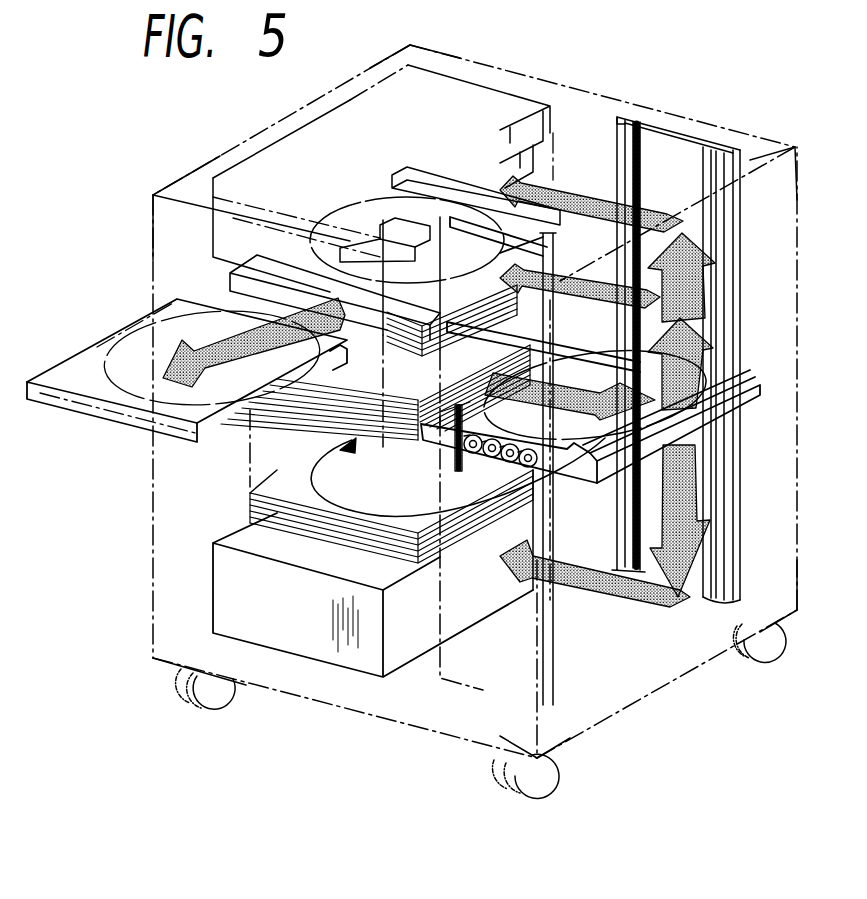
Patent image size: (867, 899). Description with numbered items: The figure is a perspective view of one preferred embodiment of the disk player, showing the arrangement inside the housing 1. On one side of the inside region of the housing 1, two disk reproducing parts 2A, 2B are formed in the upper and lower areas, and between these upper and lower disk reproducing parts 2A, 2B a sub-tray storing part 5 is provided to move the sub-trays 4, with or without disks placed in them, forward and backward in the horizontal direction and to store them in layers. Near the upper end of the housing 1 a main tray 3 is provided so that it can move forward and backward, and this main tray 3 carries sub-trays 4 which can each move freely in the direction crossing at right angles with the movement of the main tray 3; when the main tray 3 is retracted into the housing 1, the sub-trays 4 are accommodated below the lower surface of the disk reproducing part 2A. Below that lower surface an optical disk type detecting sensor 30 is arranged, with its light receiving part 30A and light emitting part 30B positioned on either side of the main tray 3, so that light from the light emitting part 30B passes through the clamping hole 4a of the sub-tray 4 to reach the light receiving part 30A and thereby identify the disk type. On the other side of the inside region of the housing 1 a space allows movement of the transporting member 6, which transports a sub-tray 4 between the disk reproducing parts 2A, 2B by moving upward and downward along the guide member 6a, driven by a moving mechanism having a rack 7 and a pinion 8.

The housing 1 is at (598, 91).
The disk reproducing part 2A is at (487, 105).
The disk reproducing part 2B is at (297, 645).
The main tray 3 is at (125, 423).
The sub-tray 4 is at (90, 352).
The clamping hole 4a is at (290, 256).
The sub-tray storing part 5 is at (250, 492).
The transporting member 6 is at (760, 393).
The guide member 6a is at (678, 146).
The rack 7 is at (457, 475).
The pinion 8 is at (510, 458).
The optical disk type detecting sensor 30 is at (372, 240).
The light receiving part 30A is at (360, 243).
The light emitting part 30B is at (458, 477).